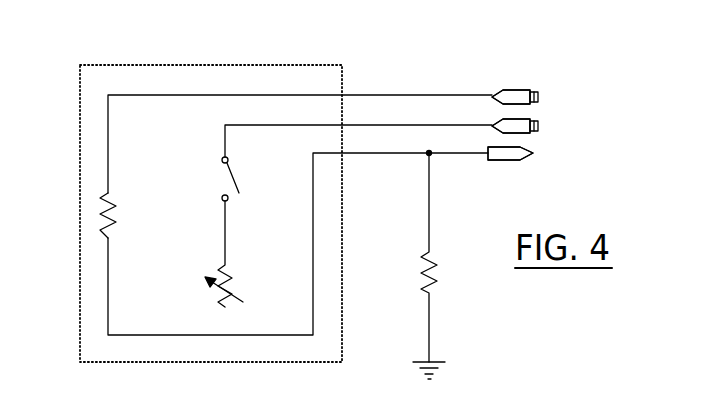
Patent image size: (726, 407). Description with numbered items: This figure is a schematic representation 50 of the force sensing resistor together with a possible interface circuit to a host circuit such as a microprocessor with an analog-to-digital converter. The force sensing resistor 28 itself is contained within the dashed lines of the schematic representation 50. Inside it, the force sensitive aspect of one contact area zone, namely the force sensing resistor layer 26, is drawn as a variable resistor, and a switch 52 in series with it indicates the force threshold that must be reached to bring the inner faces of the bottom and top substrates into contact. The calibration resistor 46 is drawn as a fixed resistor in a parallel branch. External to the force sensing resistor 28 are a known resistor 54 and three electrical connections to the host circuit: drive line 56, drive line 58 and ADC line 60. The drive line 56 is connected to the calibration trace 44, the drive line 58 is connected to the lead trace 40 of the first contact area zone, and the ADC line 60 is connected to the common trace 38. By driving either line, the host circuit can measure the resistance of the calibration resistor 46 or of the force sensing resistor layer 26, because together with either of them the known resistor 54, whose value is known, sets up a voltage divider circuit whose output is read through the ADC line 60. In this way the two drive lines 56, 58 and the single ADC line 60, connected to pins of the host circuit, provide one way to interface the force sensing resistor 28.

The FSR layer 26 is at (229, 307).
The FSR 28 is at (243, 67).
The common trace 38 is at (325, 155).
The lead trace 40 is at (328, 125).
The calibration trace 44 is at (314, 95).
The calibration resistor 46 is at (99, 218).
The schematic representation 50 is at (483, 33).
The switch 52 is at (236, 182).
The known resistor 54 is at (432, 295).
The drive line 56 is at (431, 95).
The drive line 58 is at (452, 125).
The ADC line 60 is at (463, 153).